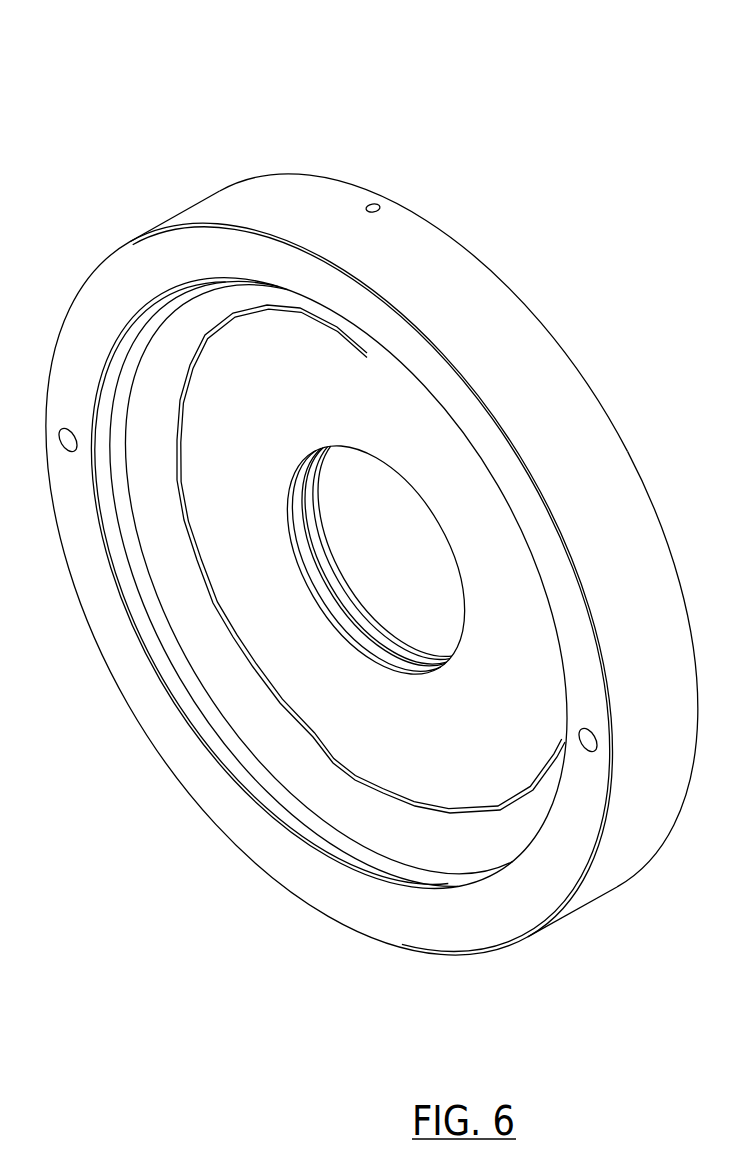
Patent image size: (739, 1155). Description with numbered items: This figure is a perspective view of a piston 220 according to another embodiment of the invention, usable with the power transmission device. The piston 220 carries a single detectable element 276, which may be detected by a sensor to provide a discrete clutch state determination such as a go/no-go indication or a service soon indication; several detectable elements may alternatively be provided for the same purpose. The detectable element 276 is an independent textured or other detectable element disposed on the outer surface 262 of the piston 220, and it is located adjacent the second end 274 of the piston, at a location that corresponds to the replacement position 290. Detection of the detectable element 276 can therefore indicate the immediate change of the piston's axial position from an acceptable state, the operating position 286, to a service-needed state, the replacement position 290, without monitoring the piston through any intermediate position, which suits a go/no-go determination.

The piston 220 is at (550, 48).
The outer surface 262 is at (280, 193).
The second end 274 is at (550, 326).
The detectable element 276 is at (378, 205).
The operating position 286 is at (359, 252).
The replacement position 290 is at (351, 200).